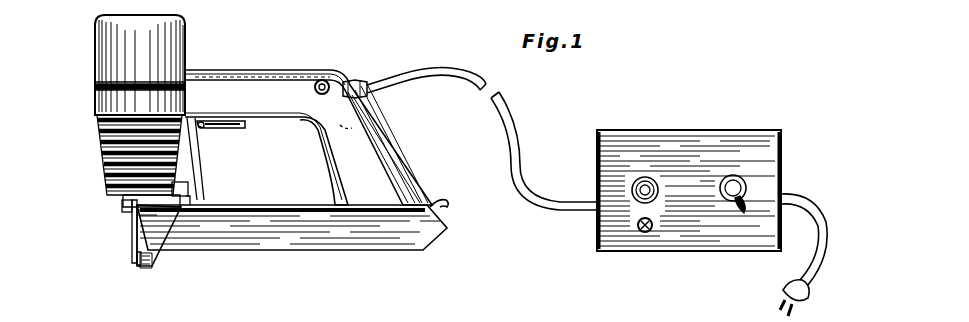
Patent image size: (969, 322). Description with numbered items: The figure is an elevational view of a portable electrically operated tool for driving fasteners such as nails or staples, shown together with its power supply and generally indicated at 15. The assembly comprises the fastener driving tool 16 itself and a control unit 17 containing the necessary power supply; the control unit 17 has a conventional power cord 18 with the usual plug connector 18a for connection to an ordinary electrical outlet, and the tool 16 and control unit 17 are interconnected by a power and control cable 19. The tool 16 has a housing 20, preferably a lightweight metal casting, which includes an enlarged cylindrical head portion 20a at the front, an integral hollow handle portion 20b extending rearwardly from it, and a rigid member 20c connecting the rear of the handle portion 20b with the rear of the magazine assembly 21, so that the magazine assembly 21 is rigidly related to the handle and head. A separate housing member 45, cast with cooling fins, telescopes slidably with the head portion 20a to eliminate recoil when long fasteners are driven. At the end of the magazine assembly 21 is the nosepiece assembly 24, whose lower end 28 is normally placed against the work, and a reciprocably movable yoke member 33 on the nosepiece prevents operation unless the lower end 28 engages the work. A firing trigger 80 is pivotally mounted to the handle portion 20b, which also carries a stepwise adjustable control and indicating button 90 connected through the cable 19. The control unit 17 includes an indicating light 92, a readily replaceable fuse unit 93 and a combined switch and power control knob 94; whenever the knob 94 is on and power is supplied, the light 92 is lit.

The electrically operated tool and power supply 15 is at (454, 238).
The fastener driving tool 16 is at (273, 63).
The control unit 17 is at (714, 126).
The power cord 18 is at (812, 200).
The plug connector 18a is at (784, 290).
The power and control cable 19 is at (518, 122).
The housing 20 is at (291, 70).
The cylindrical head portion 20a is at (108, 58).
The handle portion 20b is at (230, 77).
The connecting member 20c is at (428, 140).
The magazine assembly 21 is at (310, 240).
The nosepiece assembly 24 is at (124, 233).
The lower end of nosepiece 28 is at (133, 258).
The yoke member 33 is at (152, 230).
The housing member 45 is at (96, 97).
The firing trigger 80 is at (242, 128).
The control and indicating button 90 is at (315, 88).
The indicating light 92 is at (645, 183).
The fuse unit 93 is at (635, 223).
The combined switch and power control knob 94 is at (740, 180).